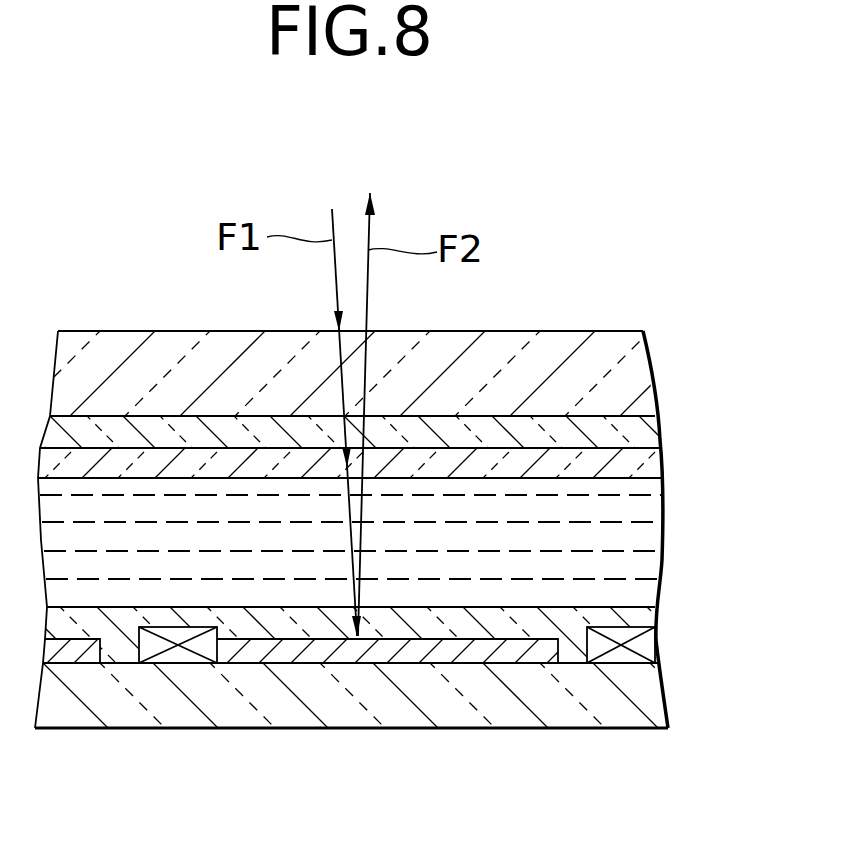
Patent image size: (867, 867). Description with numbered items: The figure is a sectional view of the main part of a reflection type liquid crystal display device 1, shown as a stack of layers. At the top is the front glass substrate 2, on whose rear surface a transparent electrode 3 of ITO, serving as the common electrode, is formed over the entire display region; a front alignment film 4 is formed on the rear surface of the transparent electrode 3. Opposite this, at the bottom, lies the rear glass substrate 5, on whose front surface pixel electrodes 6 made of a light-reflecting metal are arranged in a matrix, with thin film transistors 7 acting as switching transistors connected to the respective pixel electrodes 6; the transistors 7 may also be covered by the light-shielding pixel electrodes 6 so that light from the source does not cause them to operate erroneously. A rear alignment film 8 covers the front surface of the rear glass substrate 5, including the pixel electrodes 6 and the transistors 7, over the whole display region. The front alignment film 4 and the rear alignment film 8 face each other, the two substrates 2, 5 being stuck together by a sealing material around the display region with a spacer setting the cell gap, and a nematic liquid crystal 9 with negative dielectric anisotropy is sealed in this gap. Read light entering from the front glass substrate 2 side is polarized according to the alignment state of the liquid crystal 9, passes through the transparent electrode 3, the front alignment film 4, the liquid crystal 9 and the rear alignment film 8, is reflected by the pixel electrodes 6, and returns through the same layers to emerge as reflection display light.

The liquid crystal display device 1 is at (645, 299).
The front glass substrate 2 is at (653, 373).
The transparent electrode 3 is at (635, 430).
The front alignment film 4 is at (635, 467).
The nematic liquid crystal 9 is at (635, 543).
The rear alignment film 8 is at (635, 617).
The rear glass substrate 5 is at (635, 693).
The pixel electrode 6 is at (377, 653).
The thin film transistor 7 is at (180, 653).